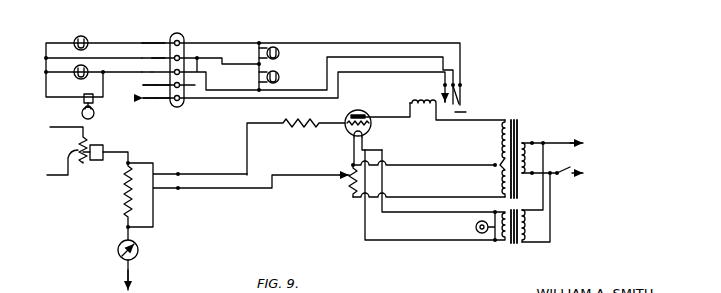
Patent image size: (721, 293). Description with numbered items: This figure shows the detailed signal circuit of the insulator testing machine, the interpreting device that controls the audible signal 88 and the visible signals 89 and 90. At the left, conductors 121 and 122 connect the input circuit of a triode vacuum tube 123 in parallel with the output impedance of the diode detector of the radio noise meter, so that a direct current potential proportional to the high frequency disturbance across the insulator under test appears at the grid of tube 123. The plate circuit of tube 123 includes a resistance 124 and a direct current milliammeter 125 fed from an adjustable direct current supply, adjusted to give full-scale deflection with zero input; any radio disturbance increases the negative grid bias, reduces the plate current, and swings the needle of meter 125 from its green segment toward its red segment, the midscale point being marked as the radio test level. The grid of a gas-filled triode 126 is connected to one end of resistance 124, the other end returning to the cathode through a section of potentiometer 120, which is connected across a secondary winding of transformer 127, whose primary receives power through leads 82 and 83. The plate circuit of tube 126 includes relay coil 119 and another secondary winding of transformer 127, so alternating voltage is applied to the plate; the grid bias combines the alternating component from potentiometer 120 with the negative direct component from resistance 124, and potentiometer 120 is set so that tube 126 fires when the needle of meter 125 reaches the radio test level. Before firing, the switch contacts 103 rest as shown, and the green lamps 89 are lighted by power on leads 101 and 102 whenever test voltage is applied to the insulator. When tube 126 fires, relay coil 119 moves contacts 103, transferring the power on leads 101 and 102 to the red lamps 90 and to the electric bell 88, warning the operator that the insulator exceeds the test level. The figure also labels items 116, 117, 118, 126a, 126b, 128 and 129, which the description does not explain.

The lead 82 is at (574, 176).
The lead 83 is at (565, 143).
The audible signal 88 is at (94, 100).
The visible signal 89 is at (81, 36).
The visible signal 90 is at (77, 78).
The lead 101 is at (157, 87).
The lead 102 is at (165, 99).
The switch contacts 103 is at (466, 112).
The lead 116 is at (150, 42).
The lead 117 is at (160, 72).
The plug connector 118 is at (179, 33).
The relay coil 119 is at (410, 103).
The potentiometer 120 is at (346, 174).
The conductor 121 is at (60, 128).
The conductor 122 is at (48, 177).
The triode vacuum tube 123 is at (104, 140).
The resistance 124 is at (118, 202).
The direct current milliammeter 125 is at (118, 253).
The gas-filled triode 126 is at (373, 131).
The heater lead 126a is at (383, 241).
The heater lead 126b is at (406, 212).
The transformer 127 is at (503, 143).
The transformer 128 is at (508, 243).
The lamp 129 is at (476, 227).